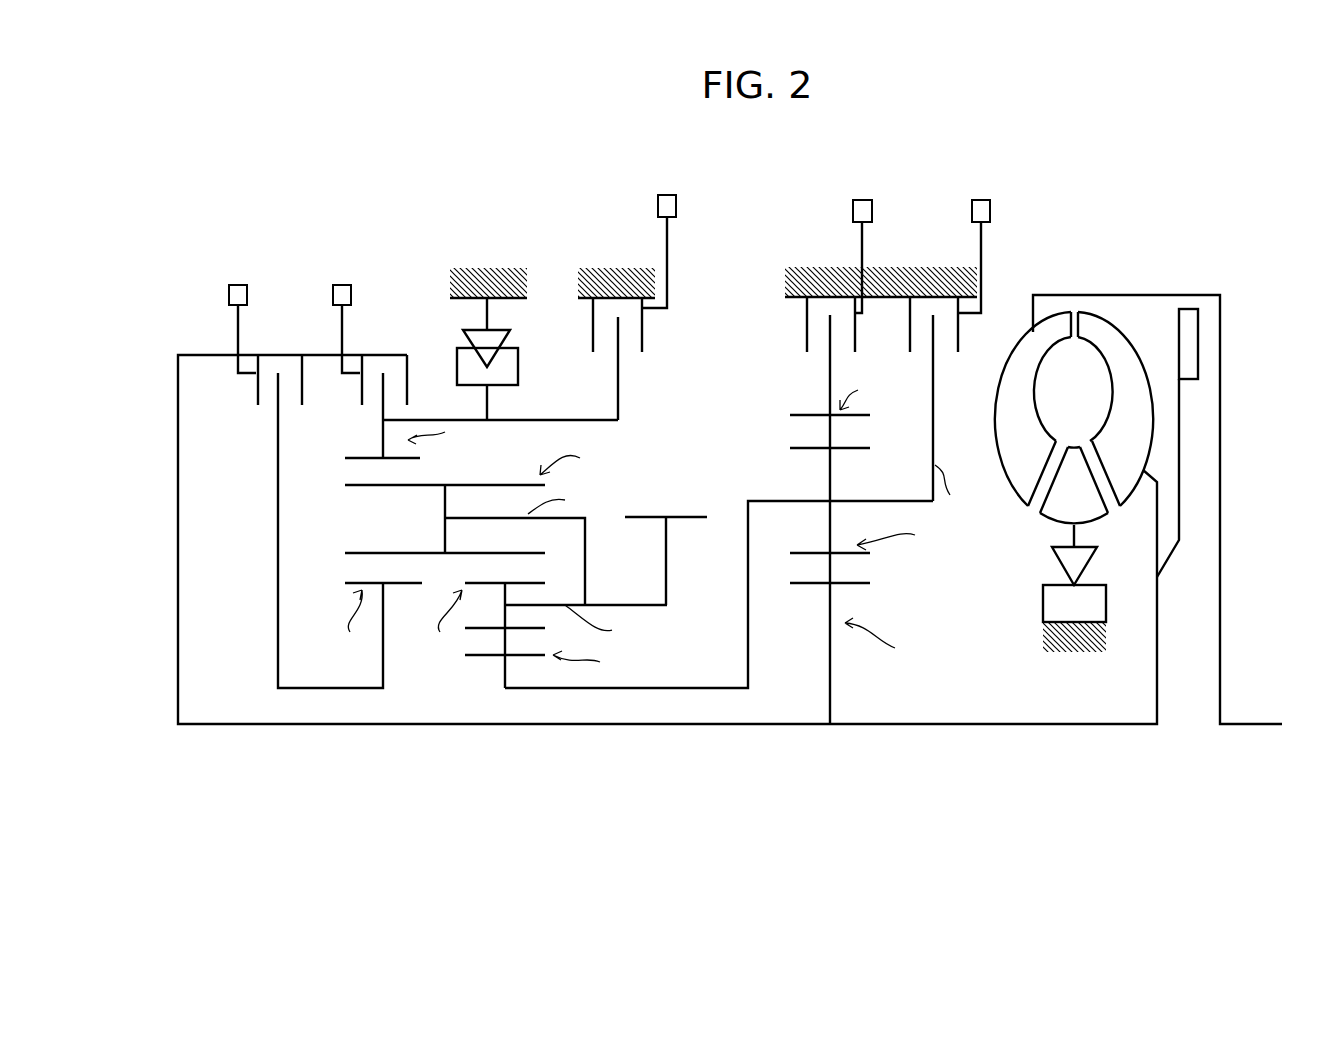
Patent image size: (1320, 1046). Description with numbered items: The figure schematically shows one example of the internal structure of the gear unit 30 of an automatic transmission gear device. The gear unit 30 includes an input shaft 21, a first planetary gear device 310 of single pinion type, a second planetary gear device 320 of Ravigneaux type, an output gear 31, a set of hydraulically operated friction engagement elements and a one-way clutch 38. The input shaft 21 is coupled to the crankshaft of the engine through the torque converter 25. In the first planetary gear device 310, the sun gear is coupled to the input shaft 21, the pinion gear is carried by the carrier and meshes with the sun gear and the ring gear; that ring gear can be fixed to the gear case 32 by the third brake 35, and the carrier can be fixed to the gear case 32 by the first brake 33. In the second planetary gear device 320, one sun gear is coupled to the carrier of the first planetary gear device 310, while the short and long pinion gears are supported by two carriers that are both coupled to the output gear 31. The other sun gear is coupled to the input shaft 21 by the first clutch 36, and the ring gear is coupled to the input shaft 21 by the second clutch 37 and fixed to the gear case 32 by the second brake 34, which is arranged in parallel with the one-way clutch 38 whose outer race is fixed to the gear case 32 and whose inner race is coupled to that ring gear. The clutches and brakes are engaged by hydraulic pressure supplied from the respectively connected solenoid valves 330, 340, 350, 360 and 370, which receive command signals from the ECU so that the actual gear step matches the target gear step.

The input shaft 21 is at (955, 723).
The torque converter 25 is at (1108, 265).
The gear unit 30 is at (716, 229).
The output gear 31 is at (693, 505).
The gear case 32 is at (488, 266).
The B1 brake 33 is at (954, 357).
The B2 brake 34 is at (642, 362).
The B3 brake 35 is at (800, 364).
The C1 clutch 36 is at (249, 399).
The C2 clutch 37 is at (353, 399).
The one-way clutch 38 is at (452, 326).
The first planetary gear device 310 is at (831, 754).
The second planetary gear device 320 is at (508, 754).
The solenoid valve 330 is at (981, 200).
The solenoid valve 340 is at (667, 195).
The solenoid valve 350 is at (862, 200).
The solenoid valve 360 is at (238, 285).
The solenoid valve 370 is at (342, 285).